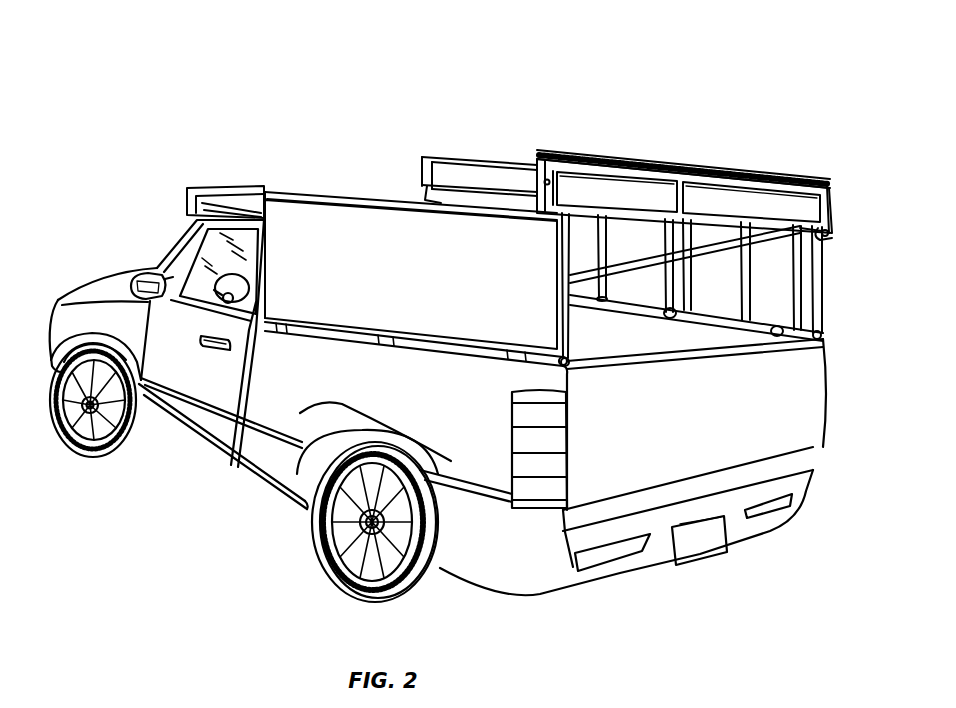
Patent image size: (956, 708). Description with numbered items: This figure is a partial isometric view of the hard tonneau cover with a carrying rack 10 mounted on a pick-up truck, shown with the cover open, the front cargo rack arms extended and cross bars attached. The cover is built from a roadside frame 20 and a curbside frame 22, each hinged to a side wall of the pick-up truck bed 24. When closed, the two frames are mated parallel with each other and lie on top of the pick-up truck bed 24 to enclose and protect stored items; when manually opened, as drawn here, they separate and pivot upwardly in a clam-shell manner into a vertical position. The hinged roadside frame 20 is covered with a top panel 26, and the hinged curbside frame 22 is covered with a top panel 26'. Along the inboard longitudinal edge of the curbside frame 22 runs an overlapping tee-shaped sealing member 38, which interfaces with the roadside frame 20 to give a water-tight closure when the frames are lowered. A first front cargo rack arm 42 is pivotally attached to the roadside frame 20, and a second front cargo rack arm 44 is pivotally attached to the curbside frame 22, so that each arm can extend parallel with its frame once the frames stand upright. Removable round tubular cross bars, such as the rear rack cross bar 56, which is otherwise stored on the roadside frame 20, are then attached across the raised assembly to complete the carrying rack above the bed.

The hard tonneau cover with a carrying rack 10 is at (698, 134).
The roadside frame 20 is at (284, 184).
The curbside frame 22 is at (826, 295).
The pick-up truck bed 24 is at (697, 337).
The top panel 26 is at (411, 226).
The top panel 26' is at (684, 153).
The tee shaped sealing member 38 is at (627, 157).
The first front cargo rack arm 42 is at (186, 188).
The second front cargo rack arm 44 is at (505, 158).
The rear rack cross bar 56 is at (827, 233).